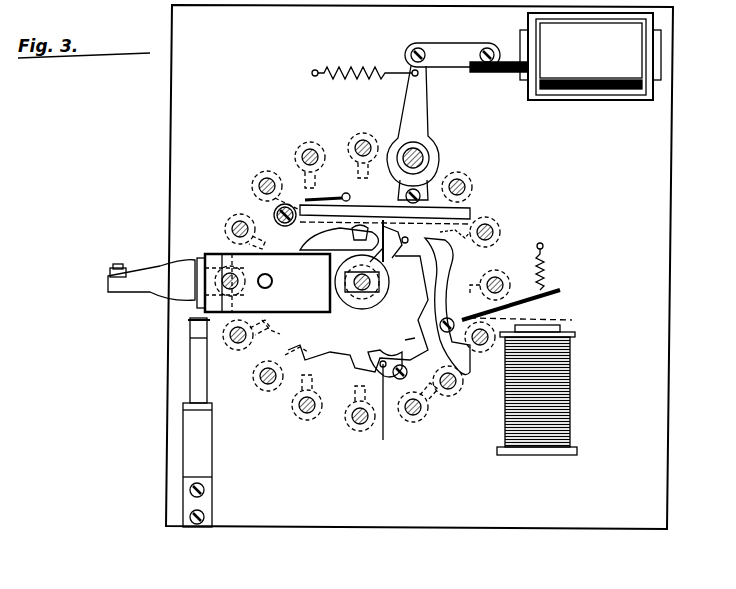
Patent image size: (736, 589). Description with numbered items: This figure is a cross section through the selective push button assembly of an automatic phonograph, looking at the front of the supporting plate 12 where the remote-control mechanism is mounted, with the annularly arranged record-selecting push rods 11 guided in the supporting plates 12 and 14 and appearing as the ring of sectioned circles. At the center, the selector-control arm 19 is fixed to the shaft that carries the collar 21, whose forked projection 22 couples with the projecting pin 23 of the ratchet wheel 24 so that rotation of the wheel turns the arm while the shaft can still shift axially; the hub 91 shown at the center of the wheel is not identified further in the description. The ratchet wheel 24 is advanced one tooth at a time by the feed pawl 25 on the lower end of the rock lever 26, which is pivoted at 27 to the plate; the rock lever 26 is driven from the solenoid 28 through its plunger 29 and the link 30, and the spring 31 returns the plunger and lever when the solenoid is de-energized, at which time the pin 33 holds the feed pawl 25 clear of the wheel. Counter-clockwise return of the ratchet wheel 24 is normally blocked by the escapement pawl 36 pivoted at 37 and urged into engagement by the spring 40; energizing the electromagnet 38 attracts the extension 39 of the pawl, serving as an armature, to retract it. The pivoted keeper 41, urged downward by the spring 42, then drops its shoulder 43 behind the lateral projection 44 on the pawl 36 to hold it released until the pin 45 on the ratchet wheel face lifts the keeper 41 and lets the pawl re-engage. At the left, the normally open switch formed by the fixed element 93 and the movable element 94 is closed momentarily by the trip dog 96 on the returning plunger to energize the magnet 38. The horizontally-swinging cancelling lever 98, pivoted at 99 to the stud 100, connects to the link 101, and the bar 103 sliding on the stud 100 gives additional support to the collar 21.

The record-selecting push rods 11 is at (365, 142).
The supporting plate 12 is at (443, 326).
The supporting plate 14 is at (226, 229).
The selector-control arm 19 is at (428, 160).
The collar 21 is at (358, 314).
The forked projection 22 is at (339, 241).
The projecting pin 23 is at (354, 233).
The ratchet wheel 24 is at (358, 299).
The feed pawl 25 is at (377, 414).
The rock lever 26 is at (427, 113).
The pivot 27 is at (470, 182).
The solenoid 28 is at (590, 56).
The plunger 29 is at (508, 72).
The link 30 is at (450, 52).
The spring 31 is at (350, 68).
The pin 33 is at (385, 366).
The escapement pawl 36 is at (450, 262).
The pivot 37 is at (450, 333).
The electromagnet 38 is at (560, 380).
The extension 39 is at (560, 290).
The spring 40 is at (545, 257).
The pivoted keeper 41 is at (300, 214).
The spring 42 is at (263, 180).
The shoulder 43 is at (470, 213).
The lateral projection 44 is at (500, 230).
The pin 45 is at (396, 243).
The shaft 91 is at (372, 283).
The fixed switch element 93 is at (195, 390).
The movable switch element 94 is at (252, 375).
The trip dog 96 is at (192, 325).
The horizontally-swinging lever 98 is at (150, 318).
The pivot 99 is at (280, 331).
The stud 100 is at (272, 280).
The link 101 is at (110, 278).
The bar 103 is at (308, 360).